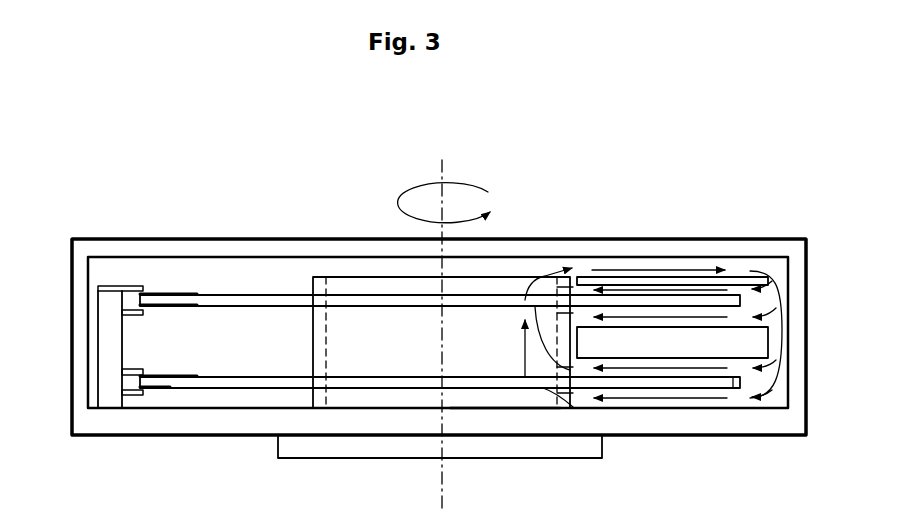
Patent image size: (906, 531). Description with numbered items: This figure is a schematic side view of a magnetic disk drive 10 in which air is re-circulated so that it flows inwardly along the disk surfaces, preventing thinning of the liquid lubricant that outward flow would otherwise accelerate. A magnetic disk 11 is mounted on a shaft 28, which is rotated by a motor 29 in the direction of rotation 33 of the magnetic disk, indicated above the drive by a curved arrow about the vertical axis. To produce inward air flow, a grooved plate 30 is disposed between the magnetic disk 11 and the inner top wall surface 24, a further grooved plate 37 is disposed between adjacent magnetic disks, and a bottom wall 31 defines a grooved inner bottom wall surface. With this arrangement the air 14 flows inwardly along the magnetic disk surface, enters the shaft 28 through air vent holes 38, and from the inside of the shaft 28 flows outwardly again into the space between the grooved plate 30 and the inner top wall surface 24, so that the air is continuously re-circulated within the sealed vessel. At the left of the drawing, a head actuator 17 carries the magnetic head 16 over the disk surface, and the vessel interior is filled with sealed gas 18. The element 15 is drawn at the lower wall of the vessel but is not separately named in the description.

The magnetic disk drive 10 is at (156, 170).
The magnetic disk 11 is at (222, 296).
The air 14 is at (630, 269).
The bottom wall 15 is at (487, 422).
The magnetic head 16 is at (166, 391).
The head actuator 17 is at (112, 403).
The sealed gas 18 is at (125, 268).
The inner top wall surface 24 is at (278, 257).
The shaft 28 is at (360, 282).
The motor 29 is at (307, 448).
The grooved plate 30 is at (735, 281).
The bottom wall 31 is at (662, 412).
The direction of rotation of the magnetic disk 33 is at (423, 183).
The grooved plate 37 is at (710, 345).
The air vent holes 38 is at (573, 400).